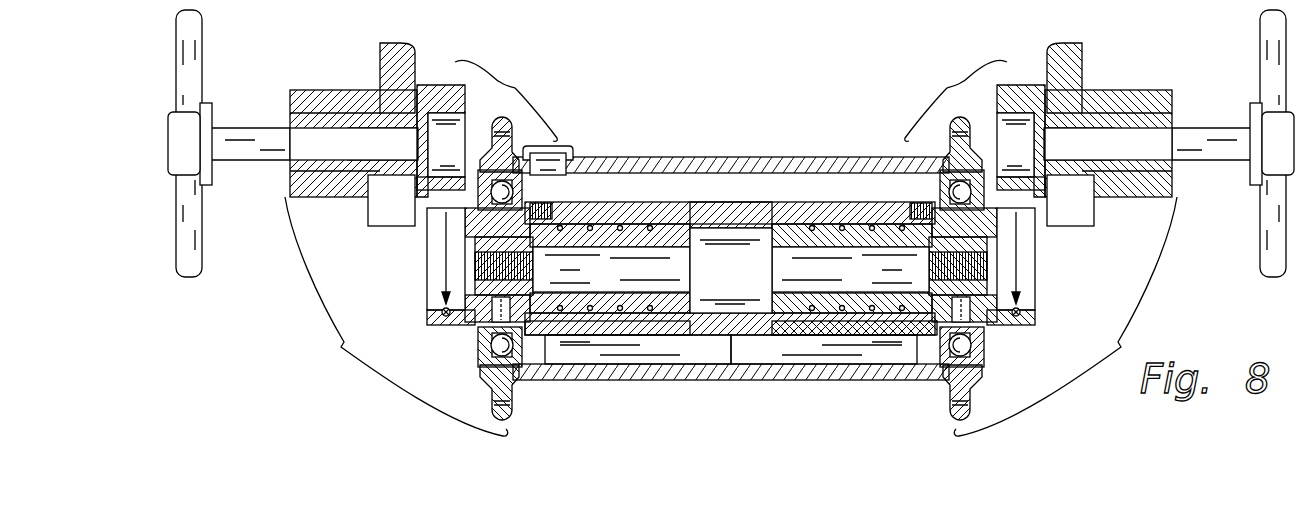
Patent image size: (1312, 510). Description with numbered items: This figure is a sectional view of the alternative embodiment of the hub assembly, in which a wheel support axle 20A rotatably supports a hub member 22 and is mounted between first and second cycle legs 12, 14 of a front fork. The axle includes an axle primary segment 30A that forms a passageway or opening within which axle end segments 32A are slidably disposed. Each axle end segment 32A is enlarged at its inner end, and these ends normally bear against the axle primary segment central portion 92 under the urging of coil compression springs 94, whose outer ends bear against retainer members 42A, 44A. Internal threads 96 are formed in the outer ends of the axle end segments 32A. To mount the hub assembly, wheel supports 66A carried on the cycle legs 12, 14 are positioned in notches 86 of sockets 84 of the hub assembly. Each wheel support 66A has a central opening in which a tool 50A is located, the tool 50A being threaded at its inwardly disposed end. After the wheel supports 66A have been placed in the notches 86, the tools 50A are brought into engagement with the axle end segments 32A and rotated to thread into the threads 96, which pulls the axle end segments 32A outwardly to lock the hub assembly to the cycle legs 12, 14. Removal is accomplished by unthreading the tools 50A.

The tool 50A is at (170, 52).
The first cycle leg 12 is at (388, 75).
The second cycle leg 14 is at (1078, 70).
The wheel support 66A is at (433, 92).
The hub member 22 is at (605, 144).
The wheel support axle 20A is at (701, 196).
The coil compression spring 94 is at (612, 214).
The internal threads 96 is at (521, 264).
The axle primary segment central portion 92 is at (702, 228).
The retainer member 42A is at (475, 223).
The retainer member 44A is at (893, 218).
The notch 86 is at (437, 271).
The socket 84 is at (462, 322).
The axle end segment 32A is at (674, 332).
The axle primary segment 30A is at (718, 327).